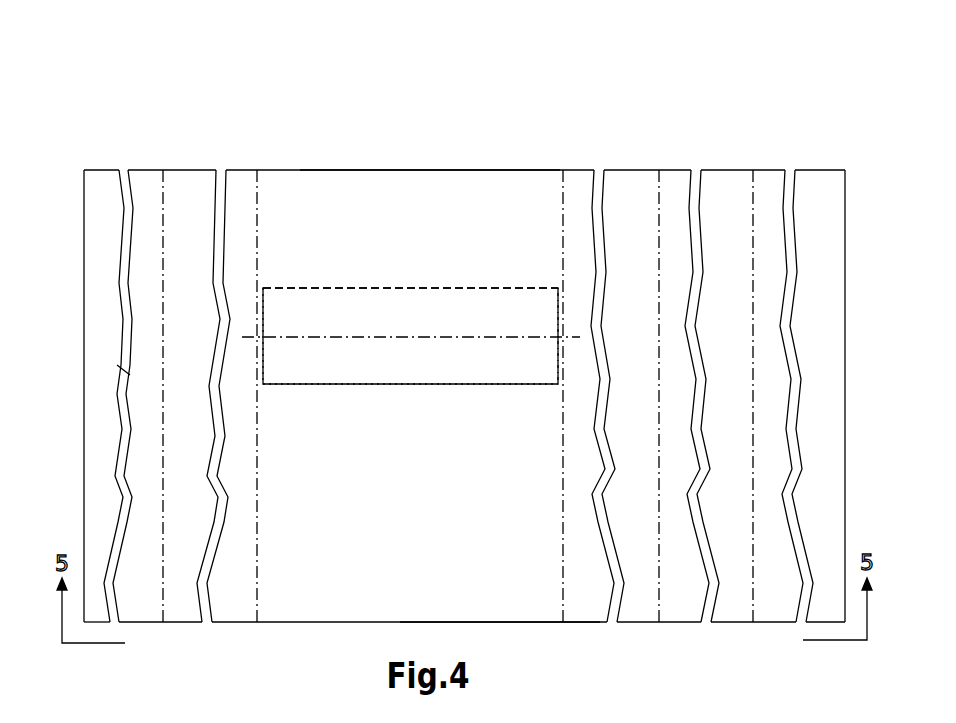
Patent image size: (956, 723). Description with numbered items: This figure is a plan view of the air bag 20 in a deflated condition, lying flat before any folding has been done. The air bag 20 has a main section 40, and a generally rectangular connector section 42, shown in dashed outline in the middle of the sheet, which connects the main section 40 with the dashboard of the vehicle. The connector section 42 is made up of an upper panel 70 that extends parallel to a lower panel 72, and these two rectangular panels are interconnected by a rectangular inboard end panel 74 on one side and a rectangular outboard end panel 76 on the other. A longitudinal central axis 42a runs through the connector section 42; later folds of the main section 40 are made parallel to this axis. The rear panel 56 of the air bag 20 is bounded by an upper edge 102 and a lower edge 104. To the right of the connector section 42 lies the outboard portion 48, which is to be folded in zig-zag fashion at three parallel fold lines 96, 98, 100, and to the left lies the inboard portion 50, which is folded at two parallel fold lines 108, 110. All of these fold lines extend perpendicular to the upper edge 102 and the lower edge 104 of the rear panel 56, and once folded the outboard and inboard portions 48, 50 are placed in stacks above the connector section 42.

The air bag 20 is at (586, 91).
The main section 40 is at (390, 163).
The connector section 42 is at (471, 280).
The longitudinal central axis 42a is at (347, 337).
The outboard portion 48 is at (593, 127).
The inboard portion 50 is at (224, 140).
The rear panel 56 is at (512, 598).
The upper panel 70 is at (452, 288).
The lower panel 72 is at (457, 384).
The inboard end panel 74 is at (265, 310).
The outboard end panel 76 is at (558, 302).
The fold line 96 is at (753, 568).
The fold line 98 is at (660, 568).
The fold line 100 is at (565, 490).
The upper edge 102 is at (503, 170).
The lower edge 104 is at (347, 622).
The fold line 108 is at (163, 377).
The fold line 110 is at (258, 490).